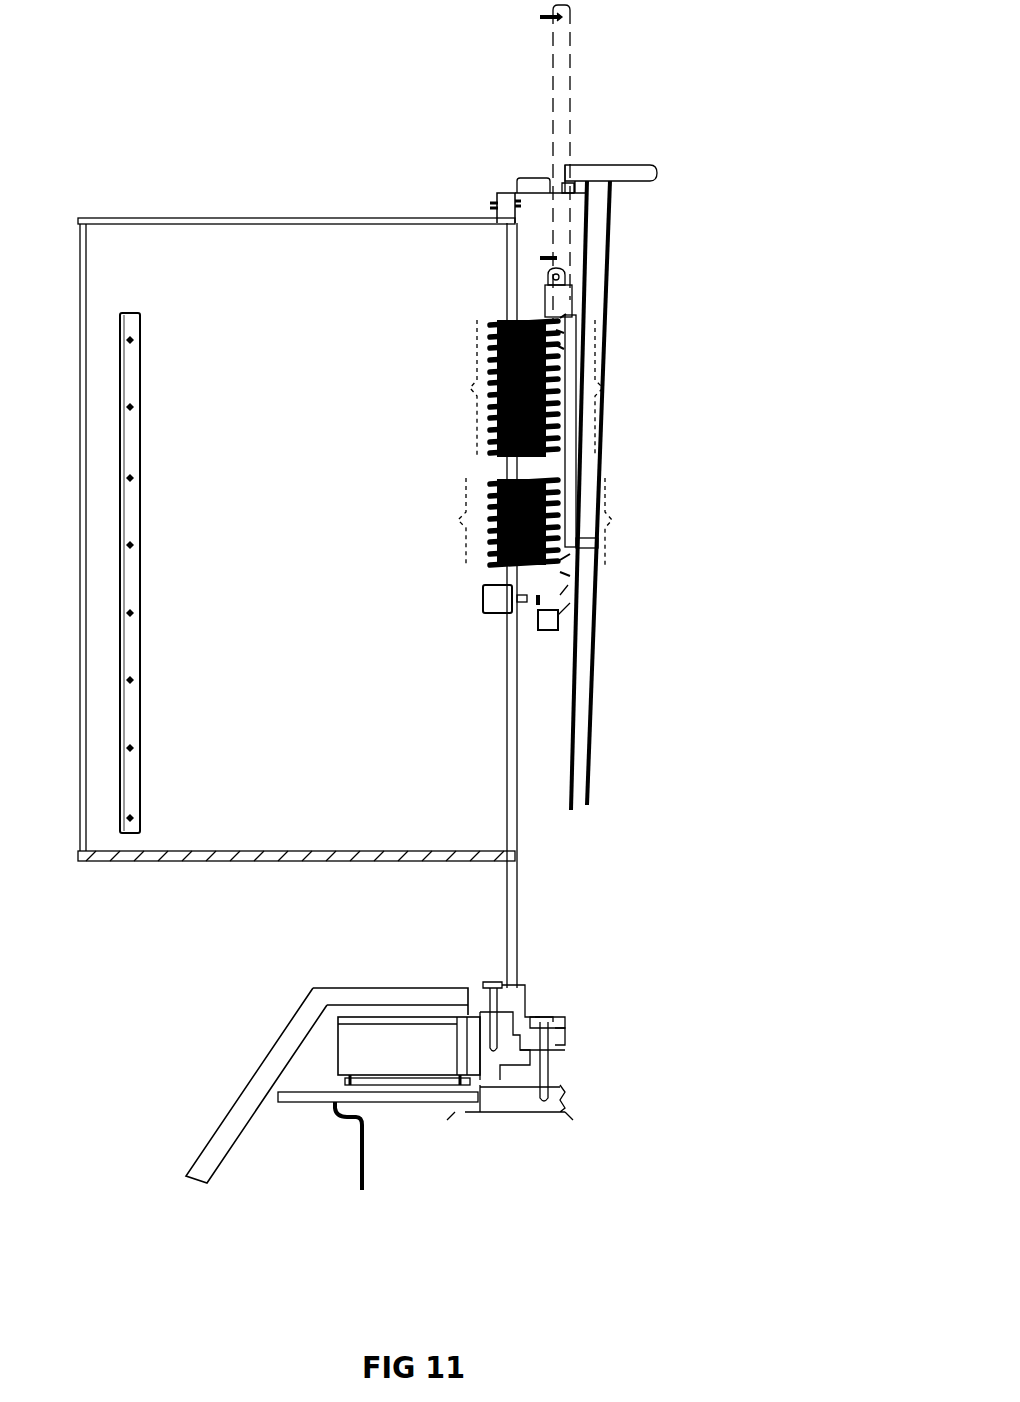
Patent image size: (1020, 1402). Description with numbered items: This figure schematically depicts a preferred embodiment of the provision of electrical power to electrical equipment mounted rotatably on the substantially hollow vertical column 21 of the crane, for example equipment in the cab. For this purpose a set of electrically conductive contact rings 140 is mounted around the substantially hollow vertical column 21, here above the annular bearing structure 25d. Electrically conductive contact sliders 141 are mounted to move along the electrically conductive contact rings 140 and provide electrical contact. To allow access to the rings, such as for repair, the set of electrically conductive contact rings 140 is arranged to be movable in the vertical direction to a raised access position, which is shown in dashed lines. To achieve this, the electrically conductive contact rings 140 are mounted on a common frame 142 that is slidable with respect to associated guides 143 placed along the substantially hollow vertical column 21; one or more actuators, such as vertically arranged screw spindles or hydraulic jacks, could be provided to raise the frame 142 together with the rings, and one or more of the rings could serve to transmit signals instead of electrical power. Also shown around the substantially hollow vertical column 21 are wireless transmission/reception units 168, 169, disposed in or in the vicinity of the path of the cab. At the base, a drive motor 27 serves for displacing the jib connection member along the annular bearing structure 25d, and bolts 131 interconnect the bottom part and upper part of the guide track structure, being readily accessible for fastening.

The substantially hollow vertical column 21 is at (640, 802).
The guides 143 is at (605, 228).
The common frame 142 is at (560, 465).
The electrically conductive contact sliders 141 is at (466, 388).
The electrically conductive contact rings 140 is at (608, 387).
The wireless transmission/reception unit 168 is at (478, 598).
The wireless transmission/reception unit 169 is at (558, 627).
The drive motor 27 is at (365, 1147).
The bolts 131 is at (510, 985).
The annular bearing structure 25d is at (590, 1057).